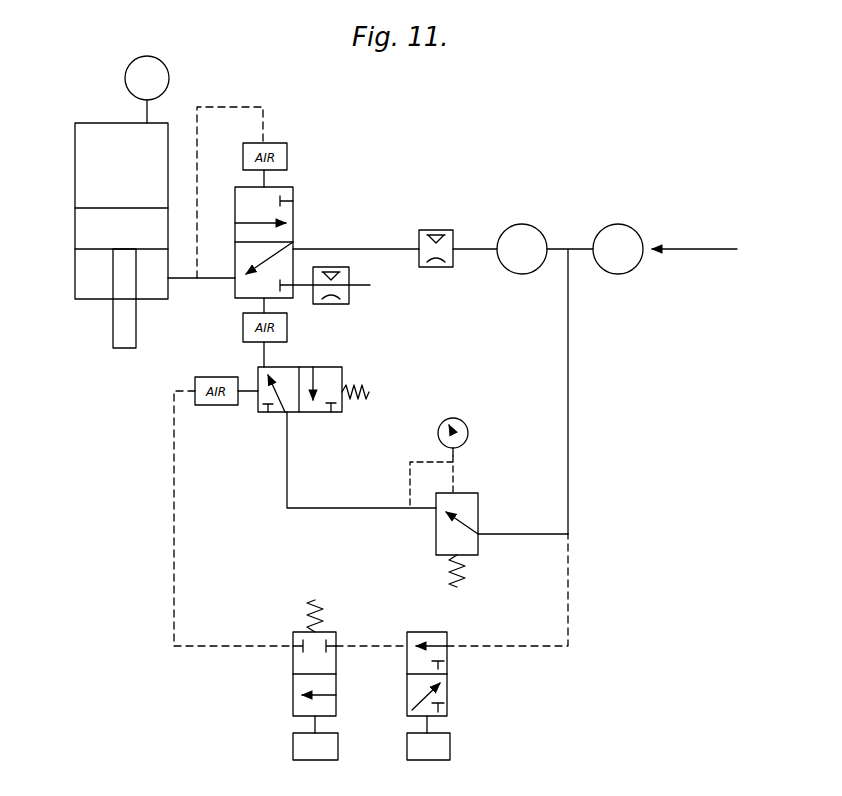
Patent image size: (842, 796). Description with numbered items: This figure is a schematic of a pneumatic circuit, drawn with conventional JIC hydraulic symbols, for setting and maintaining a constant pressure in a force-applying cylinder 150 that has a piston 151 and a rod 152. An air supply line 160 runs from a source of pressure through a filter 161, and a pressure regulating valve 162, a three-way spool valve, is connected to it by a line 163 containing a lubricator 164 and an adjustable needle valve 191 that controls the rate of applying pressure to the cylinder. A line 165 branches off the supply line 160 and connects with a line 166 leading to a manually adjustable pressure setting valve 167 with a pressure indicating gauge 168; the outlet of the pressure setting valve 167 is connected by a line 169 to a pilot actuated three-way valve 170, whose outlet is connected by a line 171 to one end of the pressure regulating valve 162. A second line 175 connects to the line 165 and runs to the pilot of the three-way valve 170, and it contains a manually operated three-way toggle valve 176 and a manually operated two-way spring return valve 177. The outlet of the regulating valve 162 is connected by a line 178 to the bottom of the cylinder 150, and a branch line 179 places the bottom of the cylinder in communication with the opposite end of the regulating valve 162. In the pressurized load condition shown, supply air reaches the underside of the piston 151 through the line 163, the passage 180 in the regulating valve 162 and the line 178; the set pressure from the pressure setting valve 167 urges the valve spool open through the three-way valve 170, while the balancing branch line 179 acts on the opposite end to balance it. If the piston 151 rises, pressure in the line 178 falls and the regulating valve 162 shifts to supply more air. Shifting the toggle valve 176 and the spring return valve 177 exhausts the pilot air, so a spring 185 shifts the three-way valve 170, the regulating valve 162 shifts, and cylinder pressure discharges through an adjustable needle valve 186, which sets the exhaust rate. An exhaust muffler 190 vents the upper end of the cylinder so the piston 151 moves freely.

The cylinder 150 is at (75, 291).
The piston 151 is at (88, 242).
The rod 152 is at (118, 336).
The air supply line 160 is at (675, 247).
The filter 161 is at (613, 226).
The pressure regulating valve 162 is at (293, 205).
The line 163 is at (478, 246).
The lubricator 164 is at (530, 233).
The line 165 is at (568, 428).
The line 166 is at (520, 533).
The pressure setting valve 167 is at (478, 497).
The pressure indicating gauge 168 is at (463, 421).
The line 169 is at (341, 508).
The pilot actuated three-way valve 170 is at (343, 367).
The line 171 is at (266, 356).
The second line 175 is at (568, 578).
The toggle valve 176 is at (447, 690).
The spring return valve 177 is at (293, 685).
The line 178 is at (213, 282).
The branch line 179 is at (230, 107).
The passage 180 is at (274, 260).
The spring 185 is at (369, 391).
The adjustable needle valve 186 is at (350, 298).
The exhaust muffler 190 is at (155, 57).
The adjustable needle valve 191 is at (420, 230).